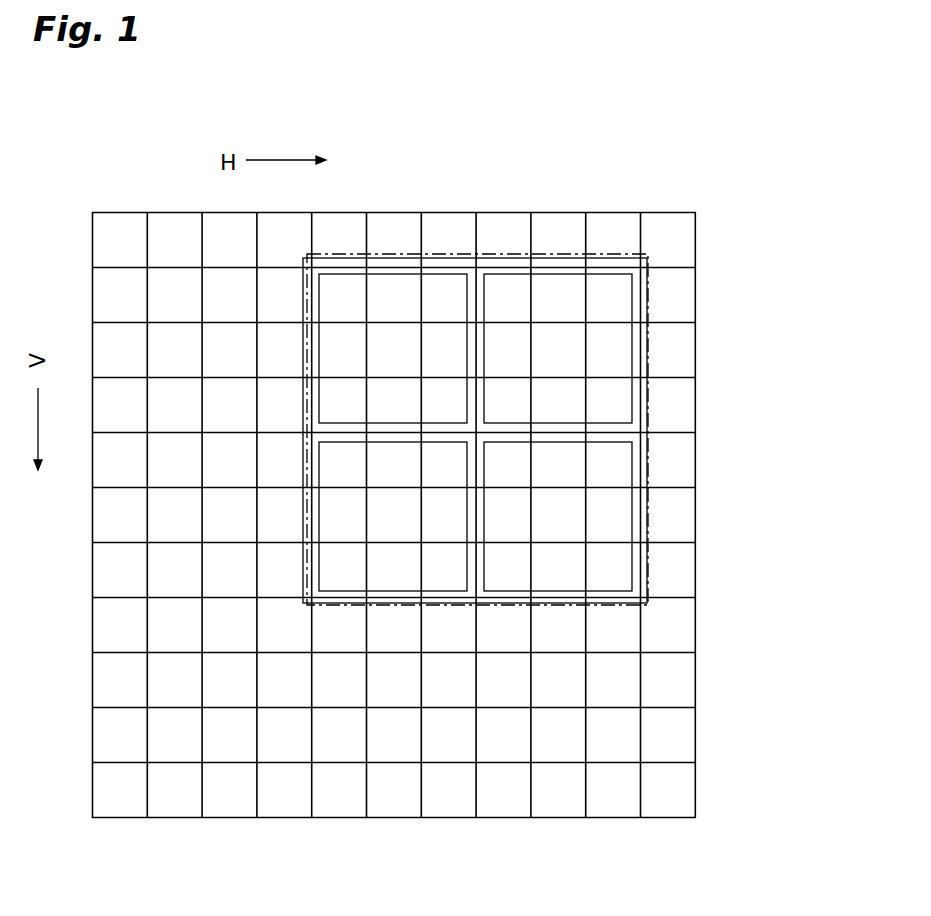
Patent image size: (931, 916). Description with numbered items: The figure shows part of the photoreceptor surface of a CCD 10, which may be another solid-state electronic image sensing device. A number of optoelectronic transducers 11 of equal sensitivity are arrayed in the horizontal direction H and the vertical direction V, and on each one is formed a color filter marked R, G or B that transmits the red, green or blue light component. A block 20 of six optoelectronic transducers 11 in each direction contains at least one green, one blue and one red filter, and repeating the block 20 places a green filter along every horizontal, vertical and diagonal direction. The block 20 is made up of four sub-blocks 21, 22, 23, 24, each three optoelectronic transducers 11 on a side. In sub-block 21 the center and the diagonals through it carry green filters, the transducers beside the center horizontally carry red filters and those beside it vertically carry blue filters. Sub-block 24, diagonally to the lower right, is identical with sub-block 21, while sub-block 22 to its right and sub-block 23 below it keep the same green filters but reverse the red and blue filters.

The CCD 10 is at (527, 158).
The optoelectronic transducer 11 is at (493, 212).
The block 20 is at (565, 254).
The sub-block 21 is at (338, 273).
The sub-block 22 is at (650, 272).
The sub-block 23 is at (320, 590).
The sub-block 24 is at (650, 440).